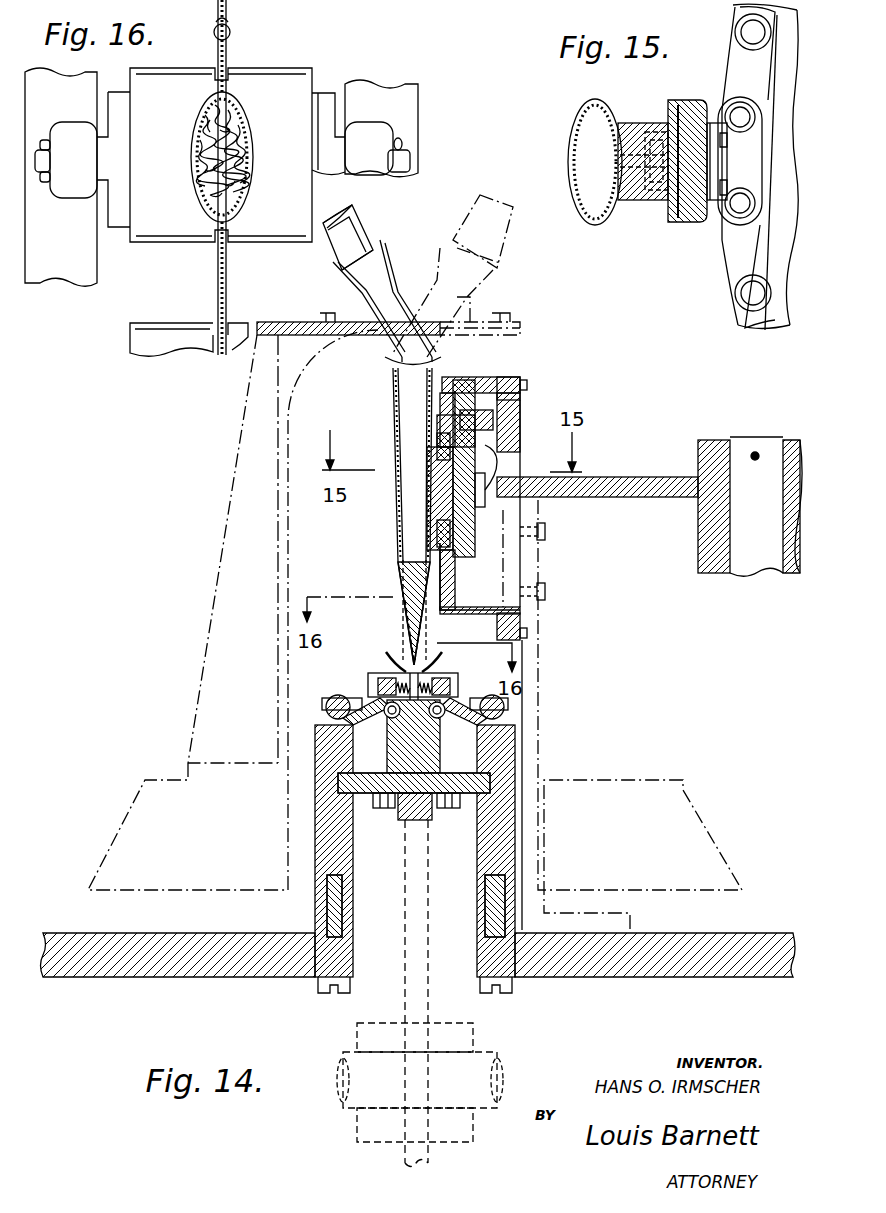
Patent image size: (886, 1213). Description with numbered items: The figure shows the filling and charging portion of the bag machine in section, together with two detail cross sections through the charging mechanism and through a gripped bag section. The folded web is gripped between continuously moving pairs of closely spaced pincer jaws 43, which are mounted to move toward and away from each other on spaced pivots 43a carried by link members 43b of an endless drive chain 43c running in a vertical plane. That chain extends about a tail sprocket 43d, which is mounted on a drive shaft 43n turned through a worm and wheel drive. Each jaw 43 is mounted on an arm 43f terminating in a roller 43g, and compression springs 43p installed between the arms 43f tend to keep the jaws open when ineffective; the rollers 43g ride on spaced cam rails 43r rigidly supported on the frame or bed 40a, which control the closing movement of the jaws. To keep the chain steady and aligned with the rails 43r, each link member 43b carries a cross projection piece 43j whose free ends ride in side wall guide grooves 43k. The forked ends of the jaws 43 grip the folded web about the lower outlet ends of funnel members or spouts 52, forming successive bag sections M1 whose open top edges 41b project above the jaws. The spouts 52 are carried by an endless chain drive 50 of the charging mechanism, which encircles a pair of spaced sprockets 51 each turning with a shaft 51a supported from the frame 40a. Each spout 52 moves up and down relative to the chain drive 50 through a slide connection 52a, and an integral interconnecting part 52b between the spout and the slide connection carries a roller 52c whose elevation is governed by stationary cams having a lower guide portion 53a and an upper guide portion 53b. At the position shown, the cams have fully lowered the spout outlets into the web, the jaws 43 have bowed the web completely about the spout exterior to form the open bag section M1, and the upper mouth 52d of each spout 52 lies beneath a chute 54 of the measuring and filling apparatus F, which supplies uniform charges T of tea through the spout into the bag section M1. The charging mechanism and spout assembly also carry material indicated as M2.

In FIG. 14, the frame or bed 40a is at (307, 953).
In FIG. 16, the open top edges 41b is at (213, 20).
In FIG. 16, the pincer jaws 43 is at (215, 75).
In FIG. 14, the pincer jaws 43 is at (392, 670).
In FIG. 14, the pivots 43a is at (283, 800).
In FIG. 14, the link members 43b is at (438, 808).
In FIG. 14, the endless drive chain 43c is at (398, 840).
In FIG. 14, the tail sprocket 43d is at (407, 972).
In FIG. 16, the arm 43f is at (95, 197).
In FIG. 14, the arm 43f is at (363, 728).
In FIG. 16, the roller 43g is at (75, 128).
In FIG. 14, the roller 43g is at (327, 713).
In FIG. 14, the cross projection piece 43j is at (370, 810).
In FIG. 14, the side wall guide grooves 43k is at (360, 797).
In FIG. 14, the drive shaft 43n is at (473, 1070).
In FIG. 14, the compression springs 43p is at (370, 685).
In FIG. 16, the cam rails 43r is at (40, 278).
In FIG. 14, the cam rails 43r is at (328, 740).
In FIG. 15, the endless chain drive 50 is at (737, 267).
In FIG. 14, the endless chain drive 50 is at (520, 442).
In FIG. 15, the sprockets 51 is at (782, 213).
In FIG. 14, the sprockets 51 is at (660, 485).
In FIG. 14, the shaft 51a is at (772, 442).
In FIG. 16, the spout or funnel member 52 is at (238, 122).
In FIG. 15, the spout or funnel member 52 is at (602, 228).
In FIG. 14, the spout or funnel member 52 is at (408, 458).
In FIG. 15, the slide connection 52a is at (688, 220).
In FIG. 14, the slide connection 52a is at (475, 460).
In FIG. 15, the interconnecting part 52b is at (640, 200).
In FIG. 14, the interconnecting part 52b is at (427, 497).
In FIG. 15, the roller 52c is at (656, 126).
In FIG. 14, the roller 52c is at (468, 400).
In FIG. 14, the mouth 52d is at (385, 355).
In FIG. 14, the lower guide portion 53a is at (450, 543).
In FIG. 14, the upper guide portion 53b is at (440, 420).
In FIG. 14, the chute 54 is at (438, 287).
In FIG. 14, the measuring and filling apparatus F is at (365, 208).
In FIG. 16, the material column M2 is at (238, 100).
In FIG. 14, the material column M2 is at (396, 582).
In FIG. 14, the bag section M1 is at (400, 622).
In FIG. 16, the charge of tea T is at (202, 155).